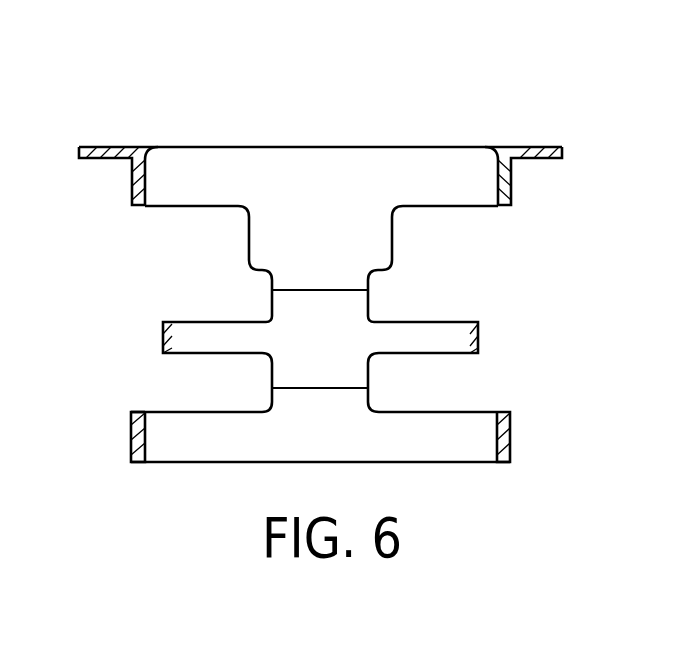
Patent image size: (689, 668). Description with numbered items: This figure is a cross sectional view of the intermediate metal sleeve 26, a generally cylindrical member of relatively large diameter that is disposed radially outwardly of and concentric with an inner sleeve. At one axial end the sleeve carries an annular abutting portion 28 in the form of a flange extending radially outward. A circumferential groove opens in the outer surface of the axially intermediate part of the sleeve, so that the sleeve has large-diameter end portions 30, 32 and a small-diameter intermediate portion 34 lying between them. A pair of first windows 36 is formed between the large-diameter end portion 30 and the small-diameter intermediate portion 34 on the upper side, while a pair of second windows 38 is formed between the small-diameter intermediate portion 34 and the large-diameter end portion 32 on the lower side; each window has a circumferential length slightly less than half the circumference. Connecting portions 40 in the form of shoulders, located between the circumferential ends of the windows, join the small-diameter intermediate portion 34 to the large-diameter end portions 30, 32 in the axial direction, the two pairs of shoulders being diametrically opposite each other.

The intermediate metal sleeve 26 is at (444, 88).
The annular abutting portion 28 is at (103, 150).
The large-diameter end portion 30 is at (505, 188).
The large-diameter end portion 32 is at (137, 437).
The small-diameter intermediate portion 34 is at (478, 345).
The first window 36 is at (174, 210).
The second window 38 is at (465, 412).
The connecting portion 40 is at (350, 302).